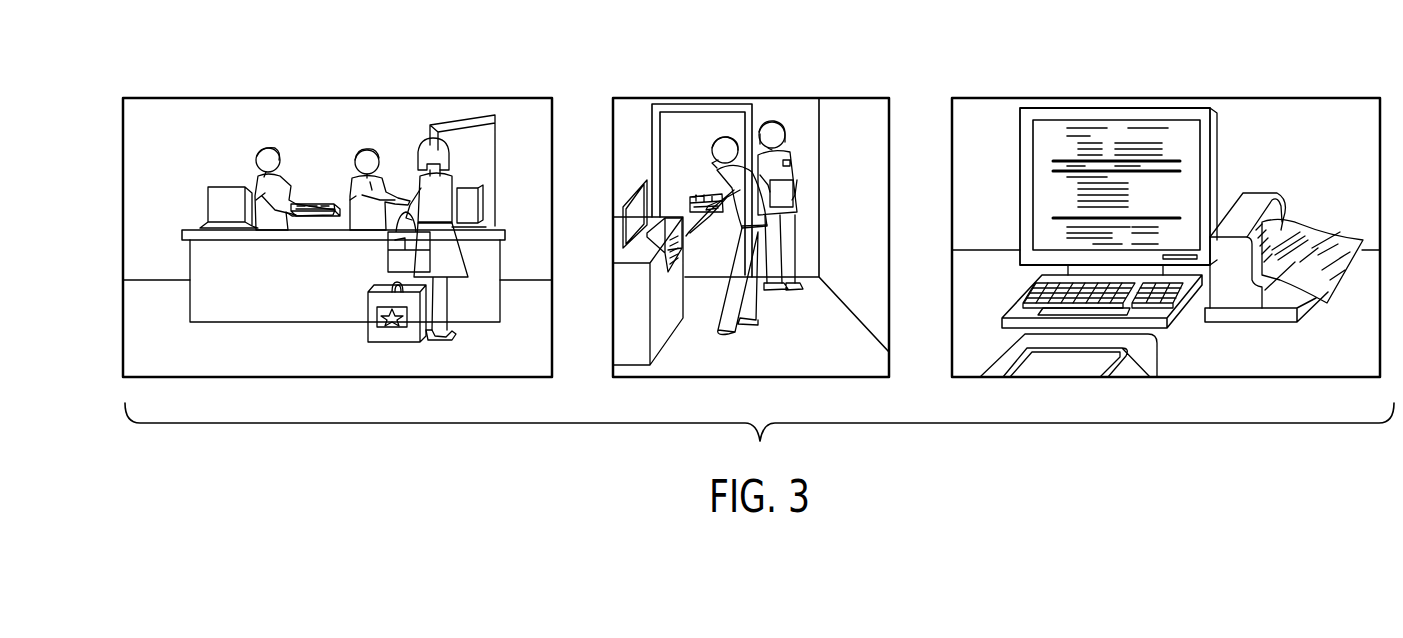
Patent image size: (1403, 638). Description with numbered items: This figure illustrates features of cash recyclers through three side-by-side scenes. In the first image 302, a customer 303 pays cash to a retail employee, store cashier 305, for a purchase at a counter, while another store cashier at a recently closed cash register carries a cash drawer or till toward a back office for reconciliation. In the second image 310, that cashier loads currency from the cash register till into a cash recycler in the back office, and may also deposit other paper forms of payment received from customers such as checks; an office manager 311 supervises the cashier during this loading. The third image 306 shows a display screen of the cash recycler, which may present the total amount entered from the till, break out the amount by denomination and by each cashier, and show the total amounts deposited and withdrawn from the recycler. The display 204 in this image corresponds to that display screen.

The display screen 204 is at (1055, 137).
The image 302 is at (158, 119).
The customer 303 is at (450, 260).
The store cashier 305 is at (357, 148).
The image 306 is at (1308, 112).
The image 310 is at (845, 117).
The office manager 311 is at (788, 208).